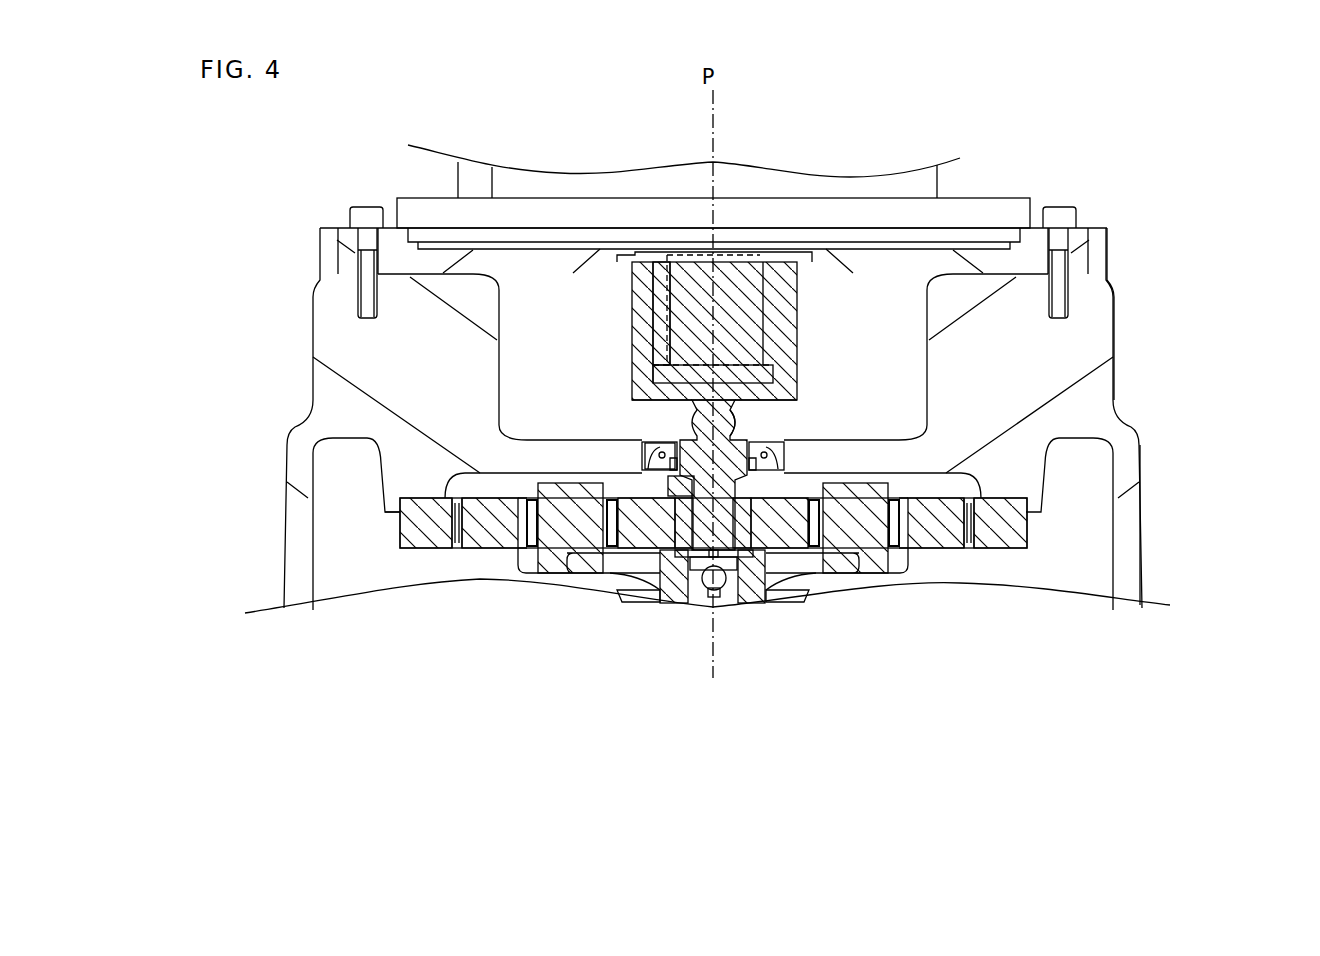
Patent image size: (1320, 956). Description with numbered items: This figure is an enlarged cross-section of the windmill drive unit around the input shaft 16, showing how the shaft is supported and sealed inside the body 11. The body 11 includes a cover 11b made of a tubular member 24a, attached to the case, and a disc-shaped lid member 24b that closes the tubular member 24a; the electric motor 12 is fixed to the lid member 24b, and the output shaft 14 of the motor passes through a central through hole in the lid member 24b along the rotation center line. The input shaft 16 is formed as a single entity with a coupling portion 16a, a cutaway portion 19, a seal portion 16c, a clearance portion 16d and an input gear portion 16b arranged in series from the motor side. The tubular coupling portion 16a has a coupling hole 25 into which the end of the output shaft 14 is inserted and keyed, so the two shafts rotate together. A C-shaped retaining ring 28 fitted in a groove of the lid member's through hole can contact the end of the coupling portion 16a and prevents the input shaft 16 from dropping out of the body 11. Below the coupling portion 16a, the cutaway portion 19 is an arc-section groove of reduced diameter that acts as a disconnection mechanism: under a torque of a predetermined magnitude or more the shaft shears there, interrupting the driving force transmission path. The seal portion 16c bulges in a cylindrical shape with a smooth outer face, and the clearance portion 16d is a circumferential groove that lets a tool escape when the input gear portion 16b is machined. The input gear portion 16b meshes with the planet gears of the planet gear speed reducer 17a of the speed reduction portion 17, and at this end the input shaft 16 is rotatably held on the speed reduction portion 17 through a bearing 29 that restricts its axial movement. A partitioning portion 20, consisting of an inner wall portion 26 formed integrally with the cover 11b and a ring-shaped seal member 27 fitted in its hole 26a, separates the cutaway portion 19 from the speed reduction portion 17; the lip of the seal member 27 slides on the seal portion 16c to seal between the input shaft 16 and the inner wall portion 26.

The body 11 is at (1165, 422).
The cover 11b is at (1184, 314).
The electric motor 12 is at (593, 182).
The output shaft 14 is at (693, 300).
The input shaft 16 is at (580, 338).
The coupling portion 16a is at (778, 330).
The input gear portion 16b is at (680, 548).
The seal portion 16c is at (783, 455).
The clearance portion 16d is at (667, 477).
The speed reduction portion 17 is at (1090, 548).
The planet gear speed reducer 17a is at (373, 547).
The cutaway portion 19 is at (754, 430).
The partitioning portion 20 is at (569, 509).
The tubular member 24a is at (1137, 570).
The lid member 24b is at (927, 263).
The coupling hole 25 is at (733, 283).
The inner wall portion 26 is at (660, 292).
The hole 26a is at (687, 492).
The seal member 27 is at (662, 442).
The retaining ring 28 is at (802, 252).
The bearing 29 is at (720, 582).